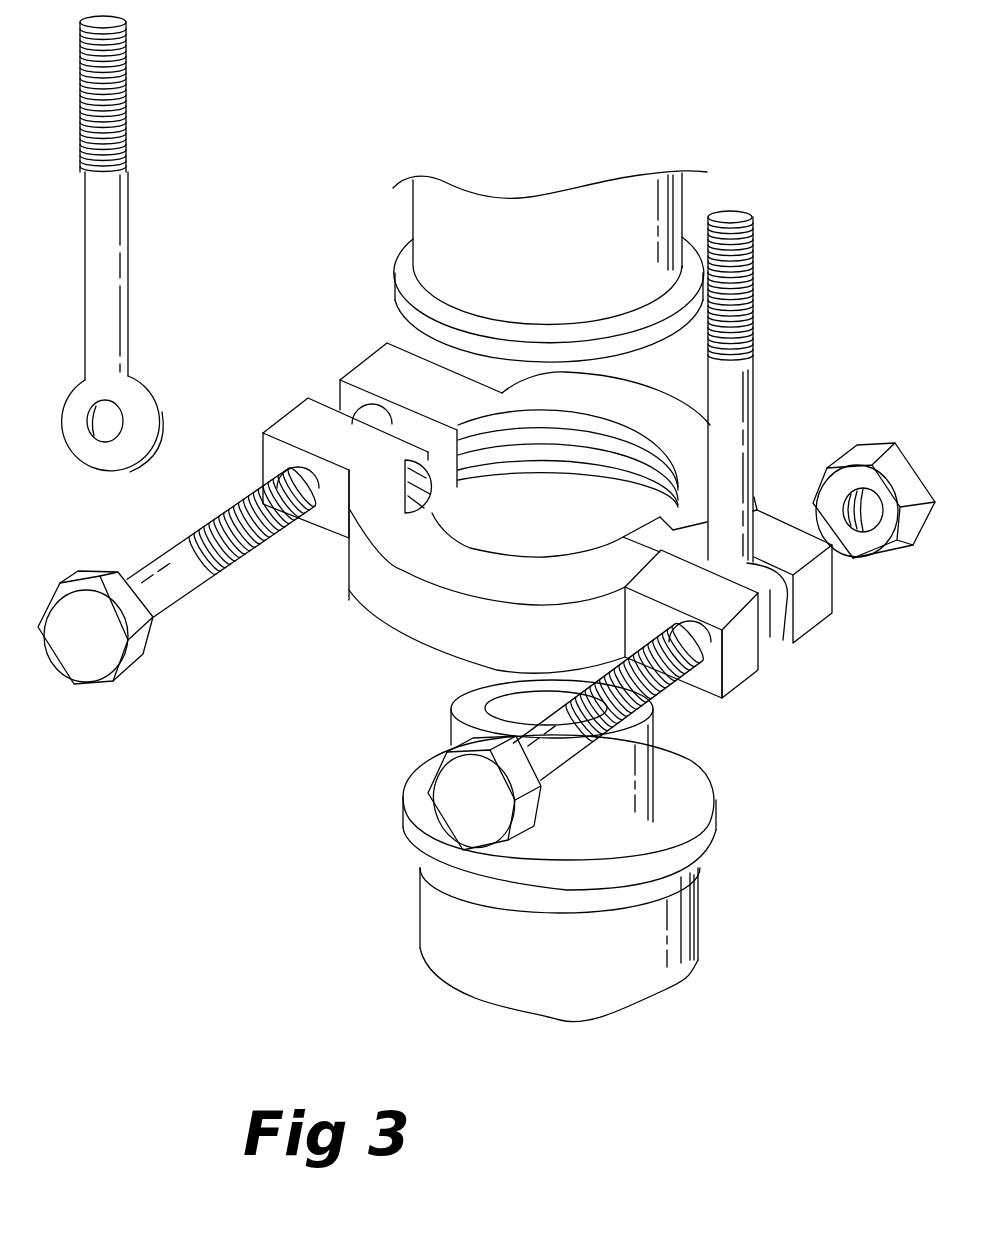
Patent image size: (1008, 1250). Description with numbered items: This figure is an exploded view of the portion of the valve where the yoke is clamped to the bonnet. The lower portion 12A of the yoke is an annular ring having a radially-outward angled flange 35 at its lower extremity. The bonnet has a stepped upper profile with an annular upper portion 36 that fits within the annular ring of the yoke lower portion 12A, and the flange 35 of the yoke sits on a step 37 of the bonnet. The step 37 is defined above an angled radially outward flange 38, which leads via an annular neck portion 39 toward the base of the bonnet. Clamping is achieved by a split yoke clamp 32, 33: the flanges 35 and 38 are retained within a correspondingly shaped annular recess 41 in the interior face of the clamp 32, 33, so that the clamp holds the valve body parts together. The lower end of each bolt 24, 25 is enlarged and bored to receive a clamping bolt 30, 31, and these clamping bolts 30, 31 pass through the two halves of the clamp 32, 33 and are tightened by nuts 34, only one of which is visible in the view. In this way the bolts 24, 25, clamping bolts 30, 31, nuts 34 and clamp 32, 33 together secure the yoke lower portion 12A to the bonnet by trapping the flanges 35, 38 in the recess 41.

The lower portion of the yoke 12A is at (663, 210).
The bolt 24 is at (727, 413).
The bolt 25 is at (99, 215).
The clamping bolt 30 is at (175, 583).
The clamping bolt 31 is at (682, 690).
The split yoke clamp half 32 is at (410, 625).
The split yoke clamp half 33 is at (765, 518).
The nut 34 is at (878, 545).
The flange of the yoke 35 is at (405, 300).
The annular upper portion of the bonnet 36 is at (622, 778).
The step of the bonnet 37 is at (678, 822).
The angled radially outward flange of the bonnet 38 is at (705, 860).
The annular neck portion 39 is at (443, 934).
The annular recess 41 is at (522, 457).